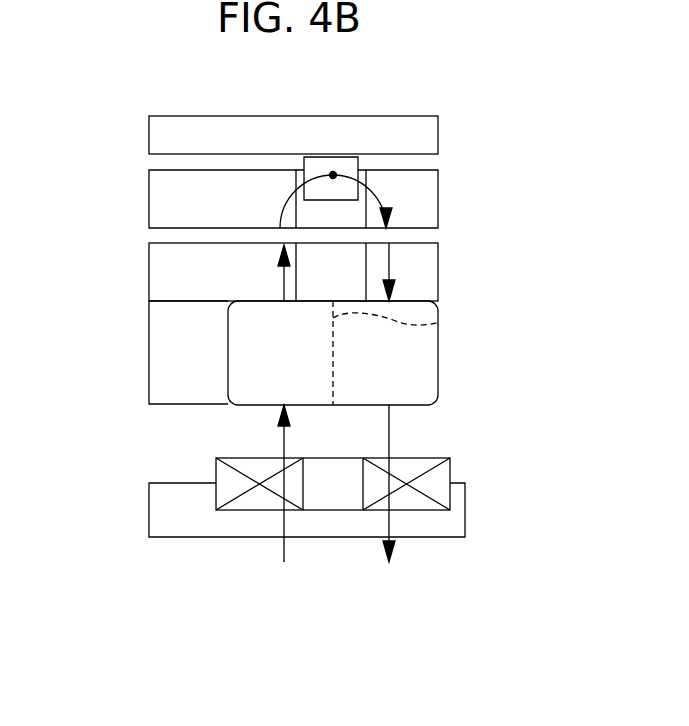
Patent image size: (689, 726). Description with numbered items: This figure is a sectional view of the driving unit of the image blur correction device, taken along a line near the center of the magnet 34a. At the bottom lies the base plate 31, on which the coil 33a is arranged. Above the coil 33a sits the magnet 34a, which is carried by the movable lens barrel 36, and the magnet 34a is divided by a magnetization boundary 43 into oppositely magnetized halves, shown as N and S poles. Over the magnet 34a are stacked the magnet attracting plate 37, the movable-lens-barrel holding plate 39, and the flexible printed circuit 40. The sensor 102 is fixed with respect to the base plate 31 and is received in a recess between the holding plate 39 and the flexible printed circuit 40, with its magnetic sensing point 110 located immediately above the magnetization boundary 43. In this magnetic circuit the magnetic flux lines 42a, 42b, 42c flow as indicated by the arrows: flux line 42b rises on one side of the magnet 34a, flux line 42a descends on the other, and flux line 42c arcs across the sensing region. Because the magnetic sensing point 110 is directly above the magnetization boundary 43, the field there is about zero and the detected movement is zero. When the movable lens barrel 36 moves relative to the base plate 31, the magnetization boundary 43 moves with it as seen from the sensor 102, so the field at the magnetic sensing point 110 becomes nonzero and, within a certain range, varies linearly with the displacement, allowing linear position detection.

The base plate 31 is at (175, 513).
The coil 33a is at (328, 486).
The magnet 34a is at (438, 347).
The movable lens barrel 36 is at (180, 362).
The magnet attracting plate 37 is at (202, 272).
The movable-lens-barrel holding plate 39 is at (180, 203).
The flexible printed circuit 40 is at (218, 127).
The magnetic flux line 42a is at (390, 520).
The magnetic flux line 42b is at (278, 525).
The magnetic flux line 42c is at (373, 188).
The magnetization boundary 43 is at (440, 322).
The sensor 102 is at (323, 163).
The magnetic sensing point 110 is at (333, 175).